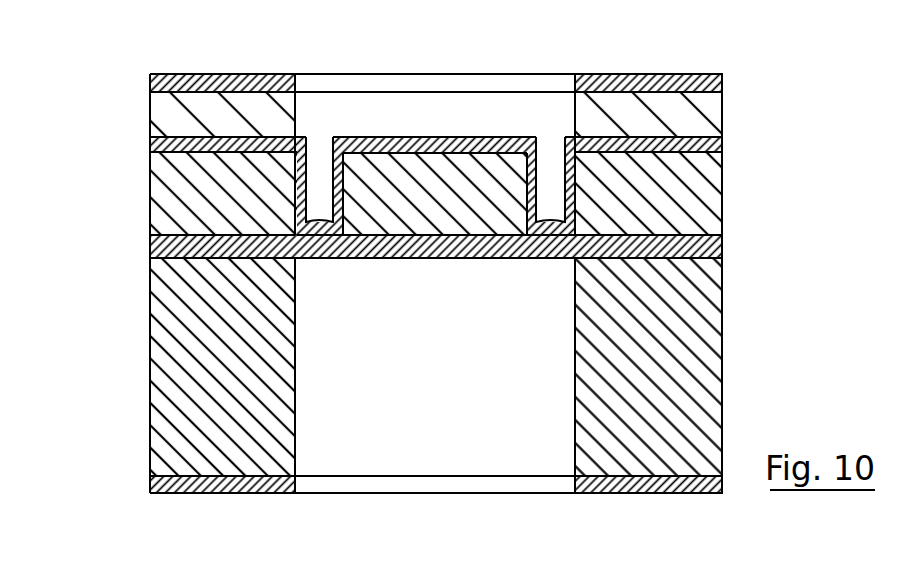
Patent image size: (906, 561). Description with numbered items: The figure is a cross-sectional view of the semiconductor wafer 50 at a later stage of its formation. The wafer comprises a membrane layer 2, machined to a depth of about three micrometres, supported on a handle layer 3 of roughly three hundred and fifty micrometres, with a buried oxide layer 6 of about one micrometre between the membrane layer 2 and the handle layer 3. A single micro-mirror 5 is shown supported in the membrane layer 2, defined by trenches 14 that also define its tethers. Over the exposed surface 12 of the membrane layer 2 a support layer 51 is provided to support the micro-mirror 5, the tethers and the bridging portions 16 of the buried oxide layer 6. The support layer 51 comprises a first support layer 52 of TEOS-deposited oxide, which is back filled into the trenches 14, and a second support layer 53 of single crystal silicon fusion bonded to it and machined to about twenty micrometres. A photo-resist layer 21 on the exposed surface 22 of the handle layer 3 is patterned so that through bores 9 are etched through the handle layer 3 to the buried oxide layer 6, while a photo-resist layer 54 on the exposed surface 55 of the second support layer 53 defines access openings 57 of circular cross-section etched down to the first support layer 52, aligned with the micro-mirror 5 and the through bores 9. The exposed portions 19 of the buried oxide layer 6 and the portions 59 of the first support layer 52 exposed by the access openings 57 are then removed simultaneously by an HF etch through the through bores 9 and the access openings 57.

The membrane layer 2 is at (707, 203).
The handle layer 3 is at (705, 355).
The micro-mirror 5 is at (432, 167).
The buried oxide layer 6 is at (723, 247).
The through bores 9 is at (478, 447).
The exposed surface of the membrane layer 12 is at (650, 147).
The trenches 14 is at (350, 185).
The bridging portions 16 is at (312, 260).
The exposed portions of the buried oxide layer 19 is at (423, 260).
The photo-resist layer 21 is at (688, 492).
The exposed surface of the handle layer 22 is at (605, 492).
The semiconductor wafer 50 is at (793, 171).
The support layer 51 is at (118, 149).
The first support layer 52 is at (717, 147).
The second support layer 53 is at (710, 107).
The photo-resist layer 54 is at (682, 78).
The exposed surface of the second support layer 55 is at (707, 78).
The access openings 57 is at (518, 102).
The portions of the first support layer 59 is at (447, 137).